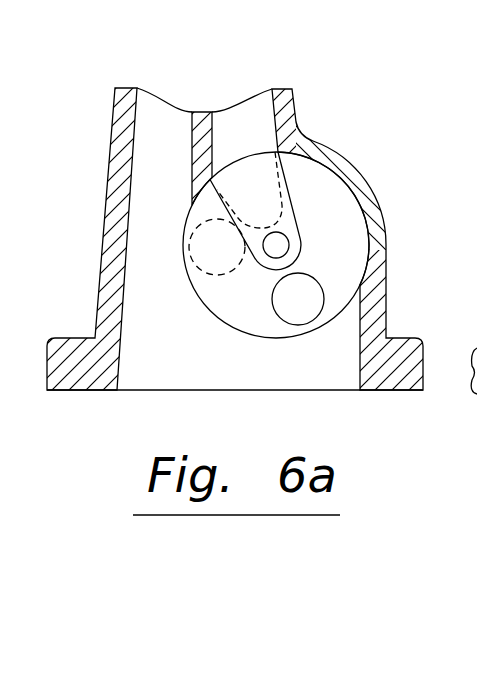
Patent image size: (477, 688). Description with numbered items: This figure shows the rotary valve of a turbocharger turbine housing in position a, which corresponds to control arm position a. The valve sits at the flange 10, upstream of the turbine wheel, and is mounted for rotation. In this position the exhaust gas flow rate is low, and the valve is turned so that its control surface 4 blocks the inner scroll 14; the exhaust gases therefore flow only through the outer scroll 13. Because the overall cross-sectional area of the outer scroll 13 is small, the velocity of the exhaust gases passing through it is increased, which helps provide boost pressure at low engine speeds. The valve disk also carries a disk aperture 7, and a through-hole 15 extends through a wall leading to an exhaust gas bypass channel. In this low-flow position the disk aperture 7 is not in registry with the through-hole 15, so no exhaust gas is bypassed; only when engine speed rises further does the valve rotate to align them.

The flange 10 is at (402, 390).
The outer scroll 13 is at (163, 108).
The inner scroll 14 is at (238, 117).
The control surface 4 is at (295, 220).
The disk aperture 7 is at (317, 273).
The through-hole 15 is at (203, 271).